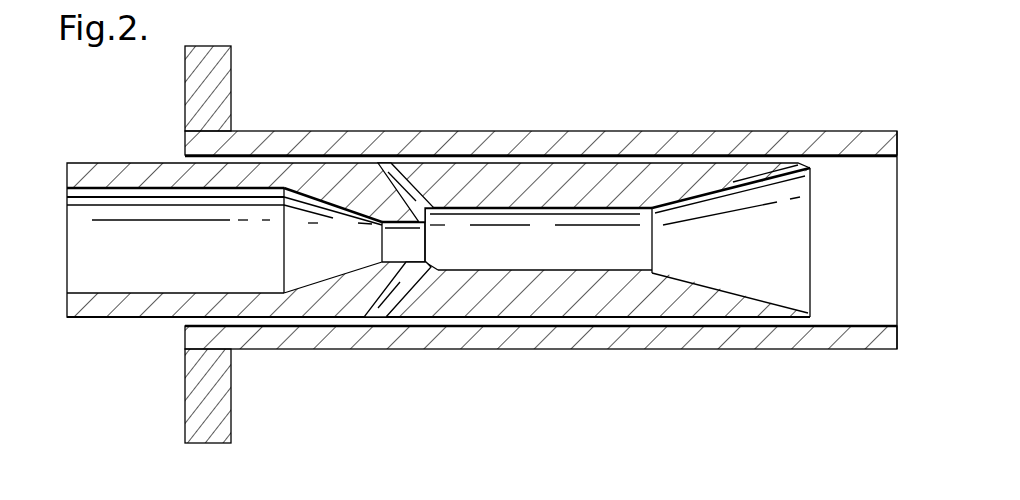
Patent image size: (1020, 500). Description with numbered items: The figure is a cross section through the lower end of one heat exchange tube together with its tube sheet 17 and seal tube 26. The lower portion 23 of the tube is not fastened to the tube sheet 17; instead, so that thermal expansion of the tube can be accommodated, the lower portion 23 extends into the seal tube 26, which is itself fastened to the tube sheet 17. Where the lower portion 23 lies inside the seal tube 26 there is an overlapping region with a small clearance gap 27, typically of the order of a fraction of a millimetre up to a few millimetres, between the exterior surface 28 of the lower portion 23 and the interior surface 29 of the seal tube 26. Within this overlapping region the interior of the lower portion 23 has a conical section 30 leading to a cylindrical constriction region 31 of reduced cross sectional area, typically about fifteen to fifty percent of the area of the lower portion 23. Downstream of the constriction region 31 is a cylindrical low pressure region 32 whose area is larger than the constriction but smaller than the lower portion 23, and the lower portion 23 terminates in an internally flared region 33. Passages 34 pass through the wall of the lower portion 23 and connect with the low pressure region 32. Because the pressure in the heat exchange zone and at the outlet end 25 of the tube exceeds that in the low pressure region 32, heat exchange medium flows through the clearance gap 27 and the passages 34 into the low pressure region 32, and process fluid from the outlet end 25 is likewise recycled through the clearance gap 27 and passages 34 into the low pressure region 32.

The tube sheet 17 is at (205, 81).
The lower portion of tube 23 is at (113, 173).
The outlet end 25 is at (822, 302).
The seal tube 26 is at (332, 136).
The clearance gap 27 is at (623, 158).
The exterior surface 28 is at (155, 163).
The interior surface 29 is at (833, 172).
The conical section 30 is at (335, 280).
The constriction region 31 is at (405, 226).
The low pressure region 32 is at (512, 217).
The internally flared region 33 is at (700, 197).
The passages 34 is at (408, 178).